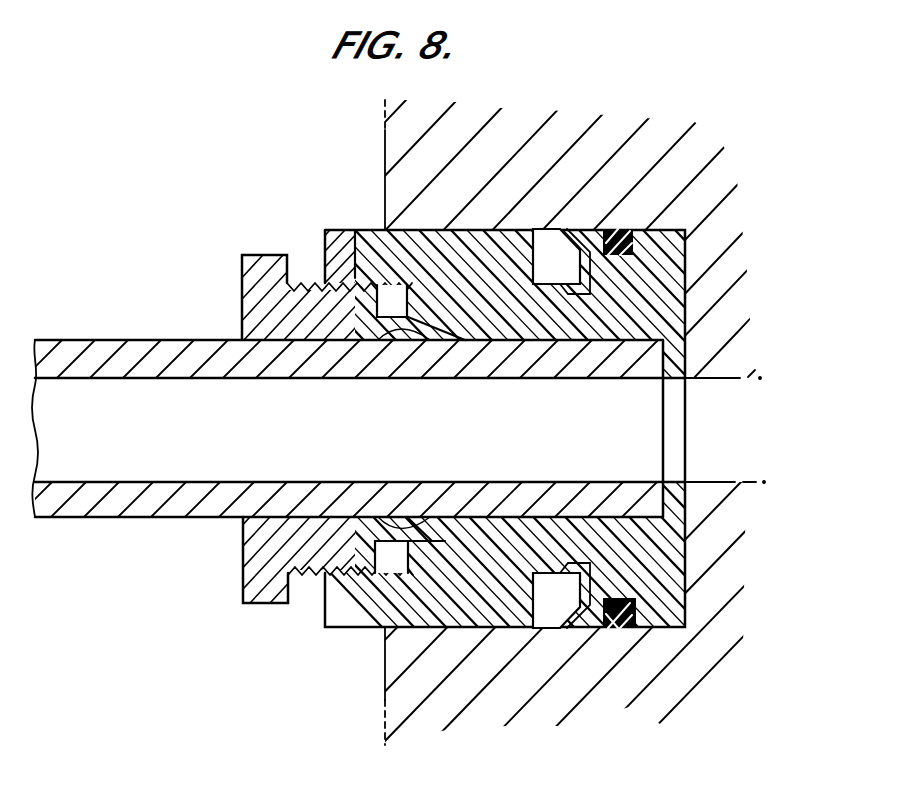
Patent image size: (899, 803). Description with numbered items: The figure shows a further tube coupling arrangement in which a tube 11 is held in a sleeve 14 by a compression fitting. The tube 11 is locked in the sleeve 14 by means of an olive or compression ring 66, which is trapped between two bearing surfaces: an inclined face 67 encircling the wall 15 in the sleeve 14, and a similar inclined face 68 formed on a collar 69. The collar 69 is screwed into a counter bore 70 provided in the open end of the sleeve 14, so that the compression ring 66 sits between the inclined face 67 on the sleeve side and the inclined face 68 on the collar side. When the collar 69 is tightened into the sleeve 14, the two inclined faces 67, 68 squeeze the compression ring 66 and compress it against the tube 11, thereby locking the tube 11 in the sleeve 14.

The tube 11 is at (97, 340).
The sleeve 14 is at (448, 246).
The wall 15 is at (572, 338).
The compression ring 66 is at (445, 332).
The inclined face 67 is at (466, 328).
The inclined face 68 is at (395, 335).
The collar 69 is at (250, 288).
The counter bore 70 is at (351, 278).